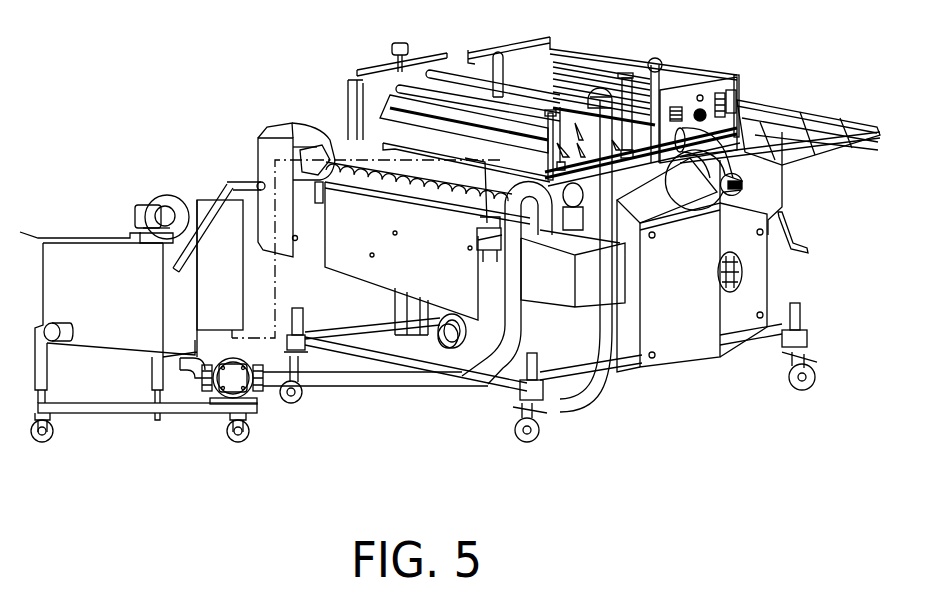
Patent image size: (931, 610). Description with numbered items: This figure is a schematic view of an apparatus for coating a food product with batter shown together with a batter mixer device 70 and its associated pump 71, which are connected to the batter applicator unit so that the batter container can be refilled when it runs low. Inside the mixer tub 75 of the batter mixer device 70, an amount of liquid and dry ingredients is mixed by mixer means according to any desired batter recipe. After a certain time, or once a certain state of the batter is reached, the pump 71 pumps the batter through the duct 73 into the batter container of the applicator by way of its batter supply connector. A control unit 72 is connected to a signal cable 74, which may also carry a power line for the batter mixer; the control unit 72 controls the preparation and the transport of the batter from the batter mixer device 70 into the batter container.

The batter mixer device 70 is at (98, 226).
The pump 71 is at (248, 390).
The control unit 72 is at (493, 275).
The duct 73 is at (442, 378).
The signal cable 74 is at (291, 158).
The mixer tub 75 is at (125, 322).